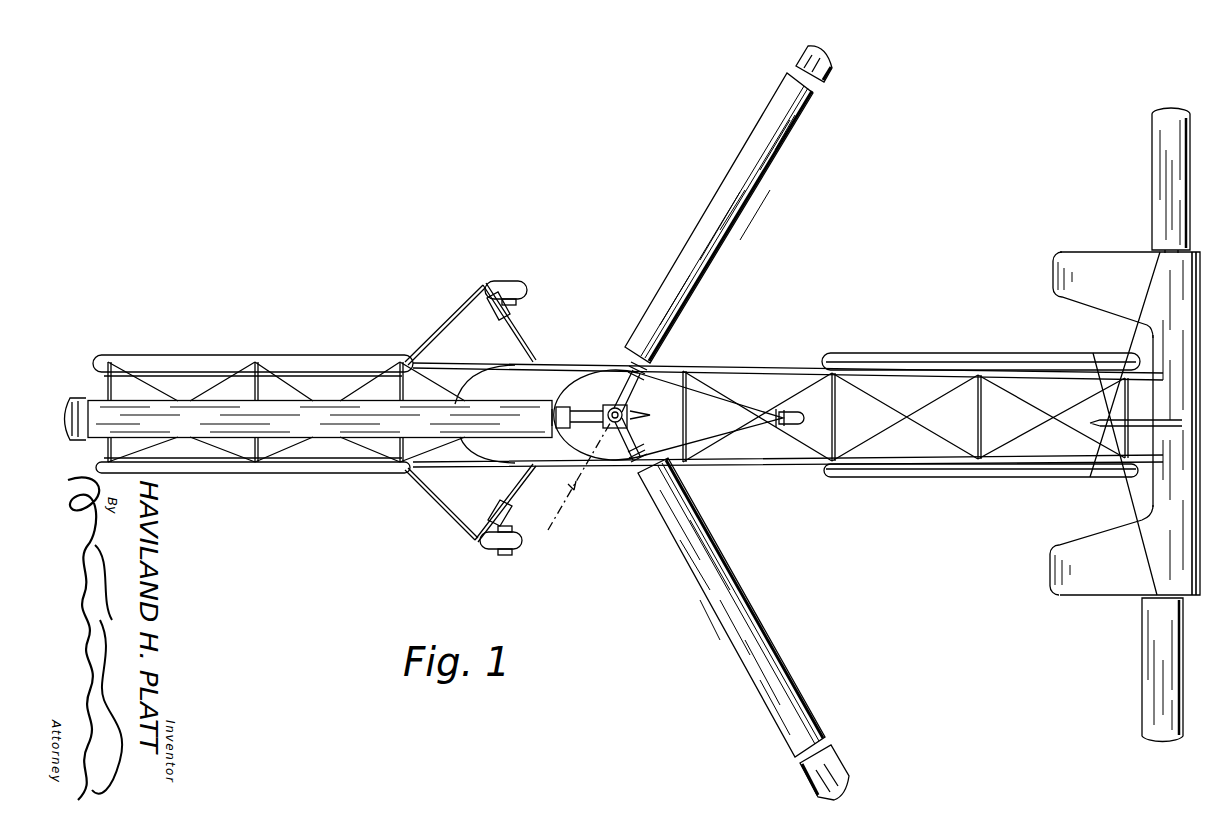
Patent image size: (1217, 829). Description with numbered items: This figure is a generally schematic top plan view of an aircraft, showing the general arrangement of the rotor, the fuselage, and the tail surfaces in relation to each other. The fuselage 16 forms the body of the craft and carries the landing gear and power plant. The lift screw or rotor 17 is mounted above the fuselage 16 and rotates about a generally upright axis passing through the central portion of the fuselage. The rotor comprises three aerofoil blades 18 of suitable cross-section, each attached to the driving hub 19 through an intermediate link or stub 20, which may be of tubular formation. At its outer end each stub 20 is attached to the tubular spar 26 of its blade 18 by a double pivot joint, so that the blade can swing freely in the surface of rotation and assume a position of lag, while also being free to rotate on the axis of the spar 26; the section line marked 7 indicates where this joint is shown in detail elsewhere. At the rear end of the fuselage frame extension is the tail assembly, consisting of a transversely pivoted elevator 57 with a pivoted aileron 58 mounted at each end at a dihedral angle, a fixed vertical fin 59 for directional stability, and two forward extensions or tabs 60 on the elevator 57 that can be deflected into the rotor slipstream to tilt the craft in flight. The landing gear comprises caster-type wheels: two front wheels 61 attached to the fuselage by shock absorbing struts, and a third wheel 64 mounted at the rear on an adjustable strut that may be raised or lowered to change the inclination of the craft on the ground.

The section line 7- 7 is at (668, 333).
The fuselage 16 is at (540, 380).
The rotor 17 is at (633, 246).
The aerofoil blades 18 is at (330, 430).
The driving hub 19 is at (613, 408).
The stub 20 is at (640, 392).
The tubular spar 26 is at (535, 388).
The elevator 57 is at (1150, 522).
The aileron 58 is at (1162, 125).
The fixed vertical fin 59 is at (1093, 420).
The tabs 60 is at (1092, 262).
The front wheels 61 is at (528, 283).
The third wheel 64 is at (795, 416).